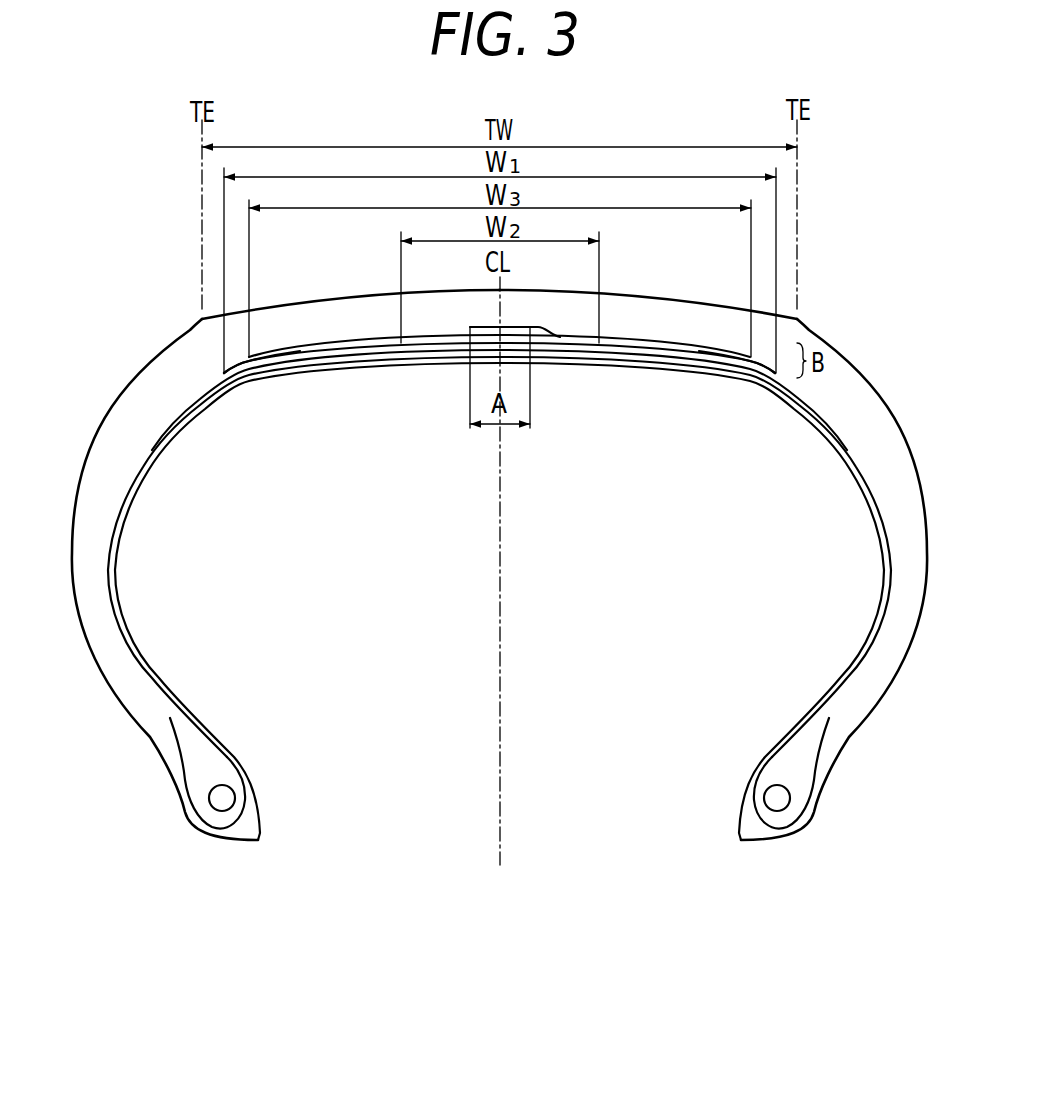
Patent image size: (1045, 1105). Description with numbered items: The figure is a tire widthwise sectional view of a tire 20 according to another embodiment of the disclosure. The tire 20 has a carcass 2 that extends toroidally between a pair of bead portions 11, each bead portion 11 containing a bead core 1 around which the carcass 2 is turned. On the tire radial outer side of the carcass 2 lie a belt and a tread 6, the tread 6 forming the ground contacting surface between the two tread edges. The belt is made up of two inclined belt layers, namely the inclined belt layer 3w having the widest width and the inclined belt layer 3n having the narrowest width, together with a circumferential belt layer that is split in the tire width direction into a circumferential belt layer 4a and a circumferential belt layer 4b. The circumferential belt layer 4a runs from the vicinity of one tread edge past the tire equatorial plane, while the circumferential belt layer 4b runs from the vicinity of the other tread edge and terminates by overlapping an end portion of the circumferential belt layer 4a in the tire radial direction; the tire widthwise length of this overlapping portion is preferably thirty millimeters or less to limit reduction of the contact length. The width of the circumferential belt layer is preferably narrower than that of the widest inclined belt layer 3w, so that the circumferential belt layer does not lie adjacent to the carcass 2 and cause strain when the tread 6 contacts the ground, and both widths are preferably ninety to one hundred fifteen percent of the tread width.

The bead core 1 is at (222, 798).
The carcass 2 is at (112, 518).
The inclined belt layer having widest width 3w is at (383, 358).
The inclined belt layer having narrowest width 3n is at (437, 343).
The circumferential belt layer 4a is at (299, 353).
The circumferential belt layer 4b is at (668, 352).
The tread 6 is at (668, 315).
The bead portion 11 is at (136, 756).
The tire 20 is at (868, 278).